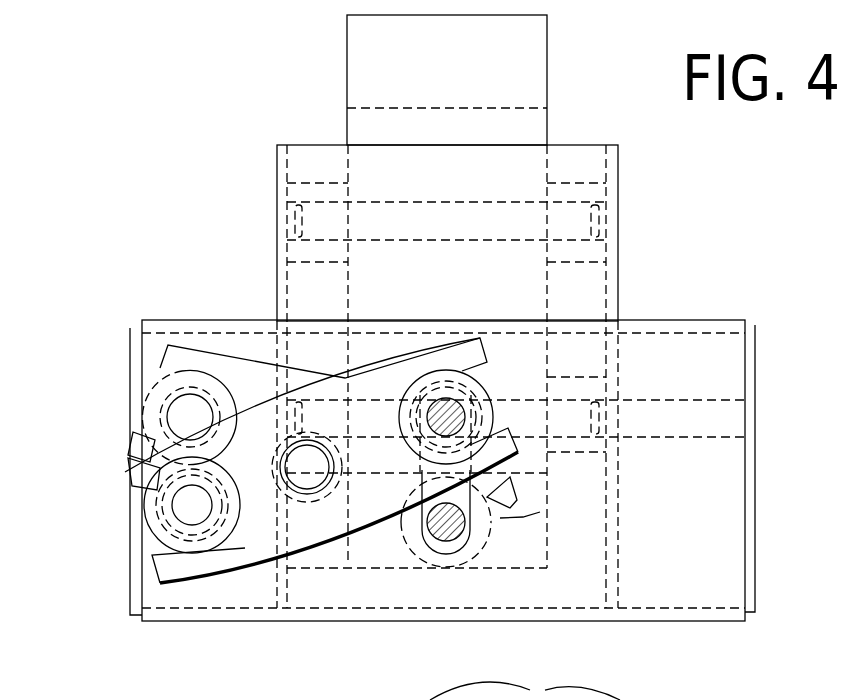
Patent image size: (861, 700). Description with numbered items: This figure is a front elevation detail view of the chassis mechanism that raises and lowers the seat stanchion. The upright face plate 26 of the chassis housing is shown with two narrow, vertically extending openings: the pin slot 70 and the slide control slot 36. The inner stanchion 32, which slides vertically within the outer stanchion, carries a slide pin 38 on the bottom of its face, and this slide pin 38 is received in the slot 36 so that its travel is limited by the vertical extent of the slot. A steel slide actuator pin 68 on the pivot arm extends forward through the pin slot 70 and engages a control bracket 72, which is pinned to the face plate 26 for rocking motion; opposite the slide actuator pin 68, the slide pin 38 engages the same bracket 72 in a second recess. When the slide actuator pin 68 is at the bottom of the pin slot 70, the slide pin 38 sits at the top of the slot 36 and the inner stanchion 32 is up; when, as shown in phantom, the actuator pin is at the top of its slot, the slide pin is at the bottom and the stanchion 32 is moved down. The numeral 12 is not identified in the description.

The printer housing 12 is at (527, 691).
The face plate 26 is at (682, 590).
The inner stanchion 32 is at (520, 45).
The slot 36 is at (430, 553).
The slide pin 38 is at (450, 407).
The slide actuator pin 68 is at (190, 417).
The pin slot 70 is at (152, 465).
The control bracket 72 is at (247, 552).